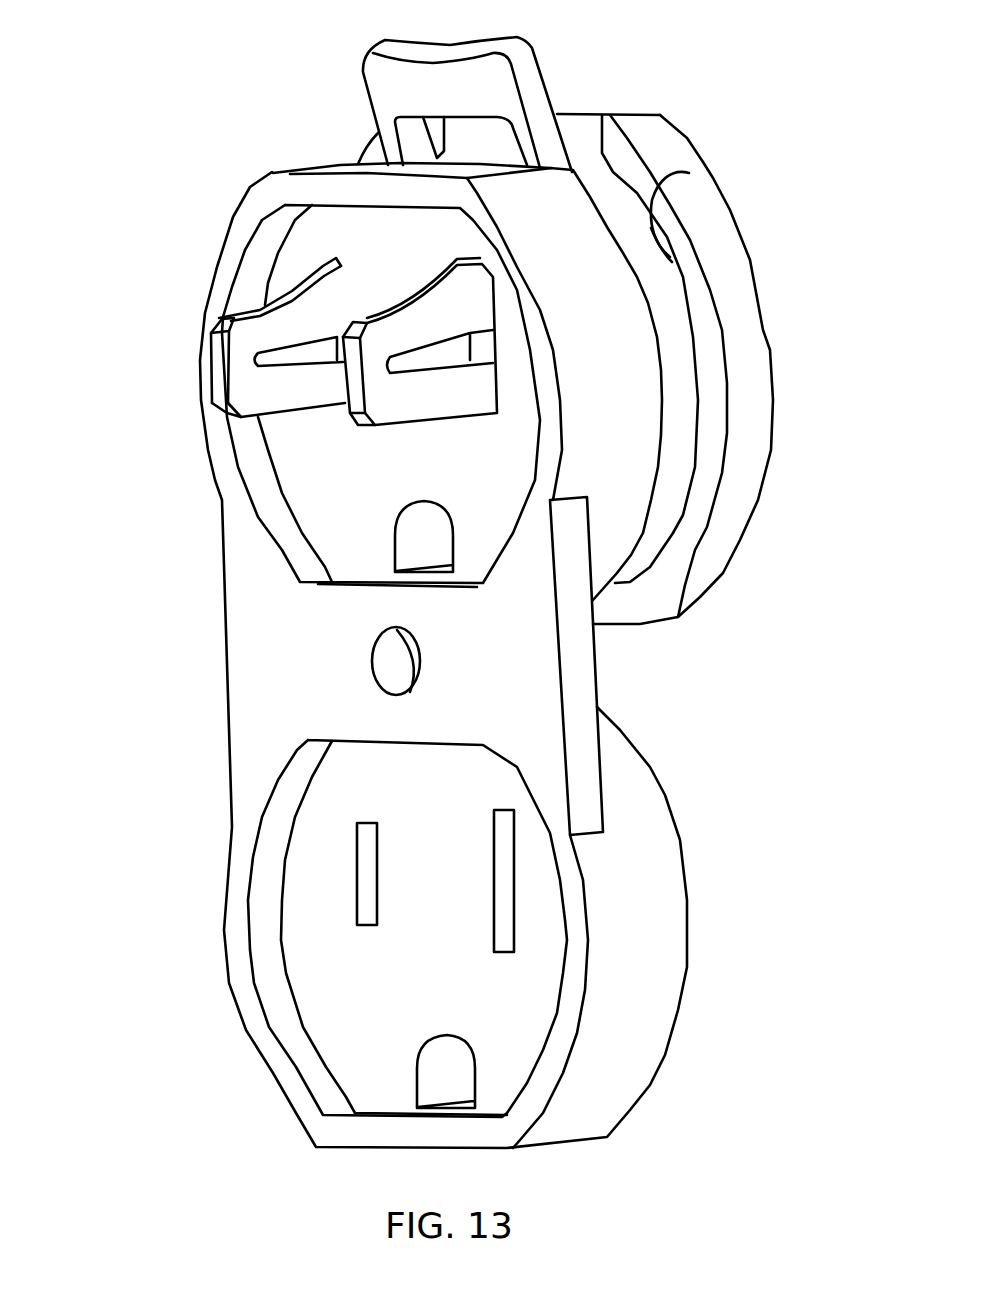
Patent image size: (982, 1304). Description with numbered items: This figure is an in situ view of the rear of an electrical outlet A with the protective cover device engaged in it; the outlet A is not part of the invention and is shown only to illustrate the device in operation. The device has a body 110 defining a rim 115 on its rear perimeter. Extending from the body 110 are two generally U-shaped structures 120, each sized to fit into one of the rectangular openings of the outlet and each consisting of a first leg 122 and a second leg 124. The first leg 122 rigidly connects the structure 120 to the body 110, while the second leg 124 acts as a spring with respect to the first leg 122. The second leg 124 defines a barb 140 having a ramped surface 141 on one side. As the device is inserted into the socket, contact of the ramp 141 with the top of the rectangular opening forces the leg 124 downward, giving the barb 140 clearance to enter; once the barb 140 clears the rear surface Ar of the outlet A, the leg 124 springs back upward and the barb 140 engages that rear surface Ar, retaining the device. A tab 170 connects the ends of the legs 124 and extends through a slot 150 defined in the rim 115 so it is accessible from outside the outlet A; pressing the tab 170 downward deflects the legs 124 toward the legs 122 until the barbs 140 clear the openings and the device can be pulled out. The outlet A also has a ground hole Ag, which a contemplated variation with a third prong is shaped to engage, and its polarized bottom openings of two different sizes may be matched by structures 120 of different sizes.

The body 110 is at (733, 512).
The rim 115 is at (689, 173).
The structure 120 is at (172, 385).
The first leg 122 is at (427, 397).
The second leg 124 is at (417, 323).
The barb 140 is at (322, 268).
The ramped surface 141 is at (277, 307).
The slot 150 is at (583, 113).
The tab 170 is at (532, 45).
The electrical outlet A is at (647, 968).
The ground hole Ag is at (423, 542).
The rear surface Ar is at (487, 490).